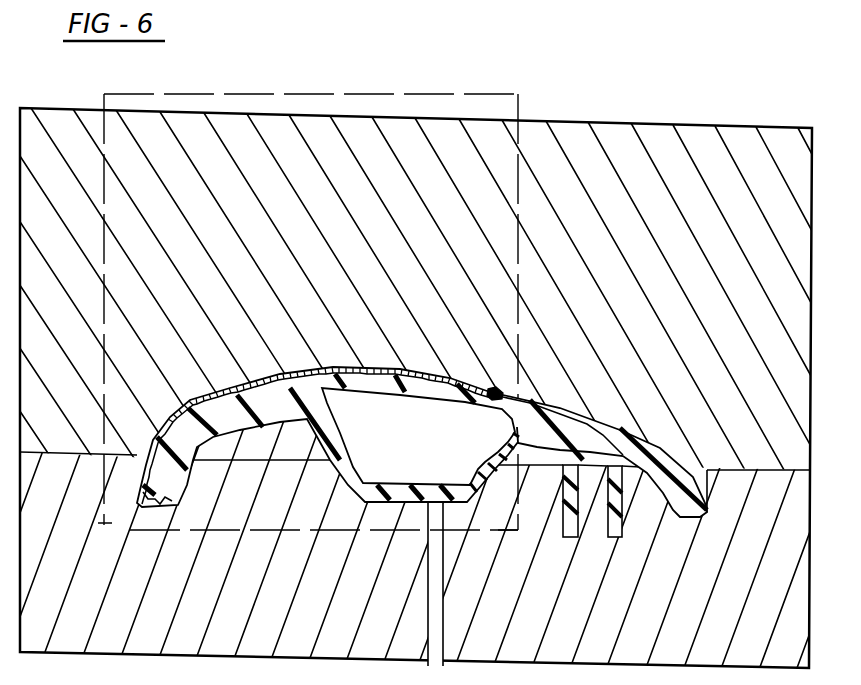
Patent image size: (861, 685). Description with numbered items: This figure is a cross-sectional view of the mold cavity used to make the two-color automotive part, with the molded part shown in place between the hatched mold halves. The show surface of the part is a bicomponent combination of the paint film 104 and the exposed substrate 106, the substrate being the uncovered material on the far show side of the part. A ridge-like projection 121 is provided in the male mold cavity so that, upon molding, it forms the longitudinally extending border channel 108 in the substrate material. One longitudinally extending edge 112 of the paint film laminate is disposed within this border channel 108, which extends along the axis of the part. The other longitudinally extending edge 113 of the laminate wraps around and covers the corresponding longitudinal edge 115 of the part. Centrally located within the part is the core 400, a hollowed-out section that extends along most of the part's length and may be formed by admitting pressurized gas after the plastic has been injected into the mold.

The paint film 104 is at (215, 378).
The exposed substrate 106 is at (613, 433).
The border channel 108 is at (545, 403).
The longitudinally extending edge 112 is at (498, 390).
The other longitudinally extending edge 113 is at (143, 505).
The longitudinal edge of the part 115 is at (172, 504).
The ridge-like projection 121 is at (497, 394).
The core 400 is at (433, 447).